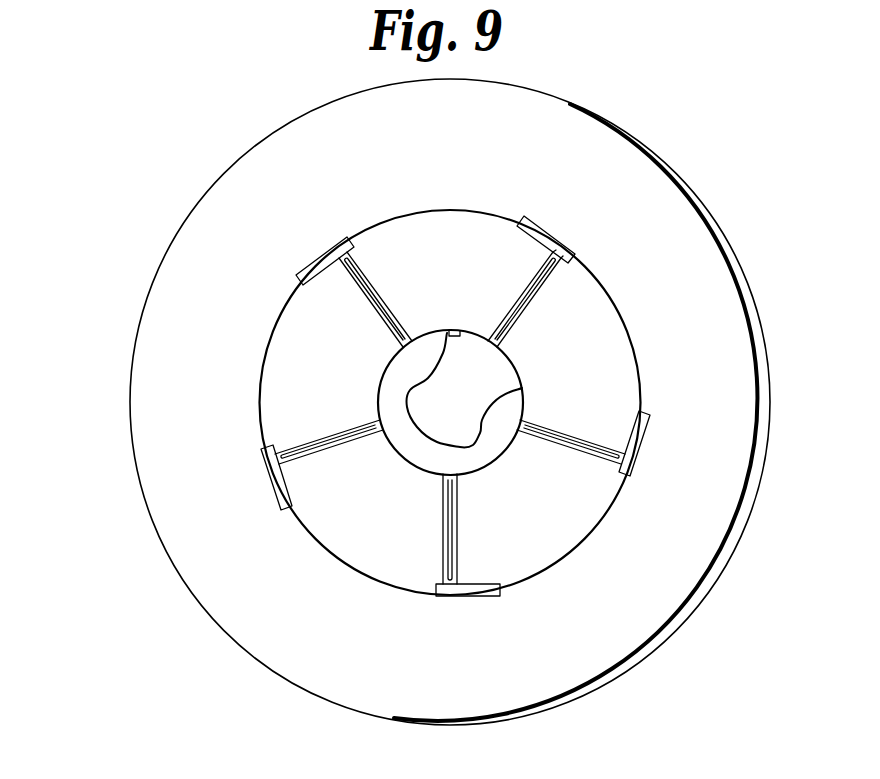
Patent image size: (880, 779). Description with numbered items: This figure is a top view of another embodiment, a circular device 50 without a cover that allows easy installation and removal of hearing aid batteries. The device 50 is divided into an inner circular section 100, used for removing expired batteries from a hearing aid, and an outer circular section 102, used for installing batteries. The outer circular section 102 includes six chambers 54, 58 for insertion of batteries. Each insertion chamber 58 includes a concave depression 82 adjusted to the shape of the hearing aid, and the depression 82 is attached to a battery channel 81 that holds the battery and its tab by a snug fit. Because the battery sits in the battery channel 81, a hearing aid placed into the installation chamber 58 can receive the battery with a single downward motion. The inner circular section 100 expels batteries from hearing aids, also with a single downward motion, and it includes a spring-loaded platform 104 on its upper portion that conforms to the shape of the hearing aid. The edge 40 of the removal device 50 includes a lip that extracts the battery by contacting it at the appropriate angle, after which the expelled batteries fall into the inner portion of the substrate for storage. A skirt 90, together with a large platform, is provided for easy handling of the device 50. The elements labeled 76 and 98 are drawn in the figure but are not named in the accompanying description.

The skirt 90 is at (247, 170).
The device 50 is at (474, 433).
The insertion chamber 58 is at (657, 473).
The outer circular section 102 is at (476, 349).
The edge 40 is at (458, 352).
The spring-loaded platform 104 is at (595, 493).
The spoke 76 is at (487, 447).
The chamber 54 is at (221, 480).
The inner circular section 100 is at (218, 335).
The spoke 98 is at (531, 286).
The battery channel 81 is at (560, 258).
The concave depression 82 is at (570, 255).